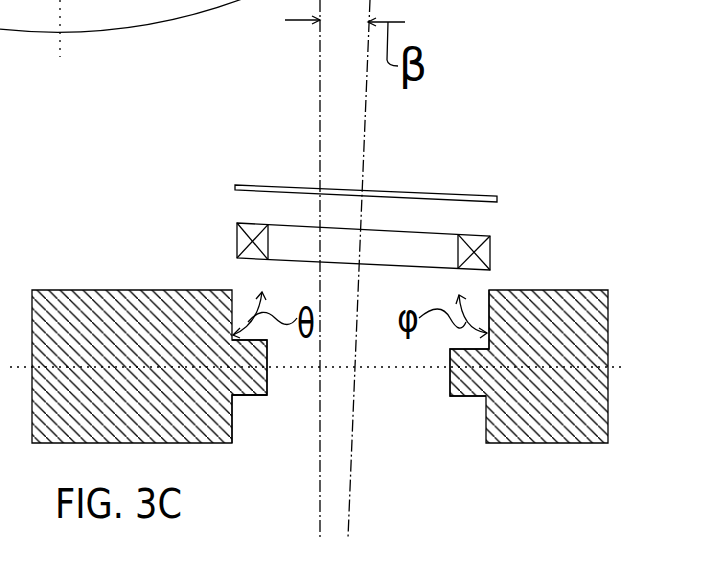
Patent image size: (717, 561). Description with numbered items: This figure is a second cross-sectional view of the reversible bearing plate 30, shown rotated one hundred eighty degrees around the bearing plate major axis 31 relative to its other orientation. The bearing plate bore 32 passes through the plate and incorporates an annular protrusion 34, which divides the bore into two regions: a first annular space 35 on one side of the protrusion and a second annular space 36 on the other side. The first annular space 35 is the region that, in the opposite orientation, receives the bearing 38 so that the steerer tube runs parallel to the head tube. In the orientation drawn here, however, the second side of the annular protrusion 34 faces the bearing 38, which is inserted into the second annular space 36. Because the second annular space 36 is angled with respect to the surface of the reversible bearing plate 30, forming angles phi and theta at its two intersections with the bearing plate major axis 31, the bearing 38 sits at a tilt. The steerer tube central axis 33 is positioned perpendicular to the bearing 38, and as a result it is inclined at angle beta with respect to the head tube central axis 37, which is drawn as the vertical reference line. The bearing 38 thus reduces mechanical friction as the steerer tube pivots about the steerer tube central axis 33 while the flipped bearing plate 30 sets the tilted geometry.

The reversible bearing plate 30 is at (627, 289).
The bearing plate major axis 31 is at (420, 376).
The bearing plate bore 32 is at (365, 402).
The steerer tube central axis 33 is at (367, 108).
The annular protrusion 34 is at (266, 386).
The first annular space 35 is at (245, 417).
The second annular space 36 is at (477, 302).
The head tube central axis 37 is at (320, 92).
The bearing 38 is at (237, 226).